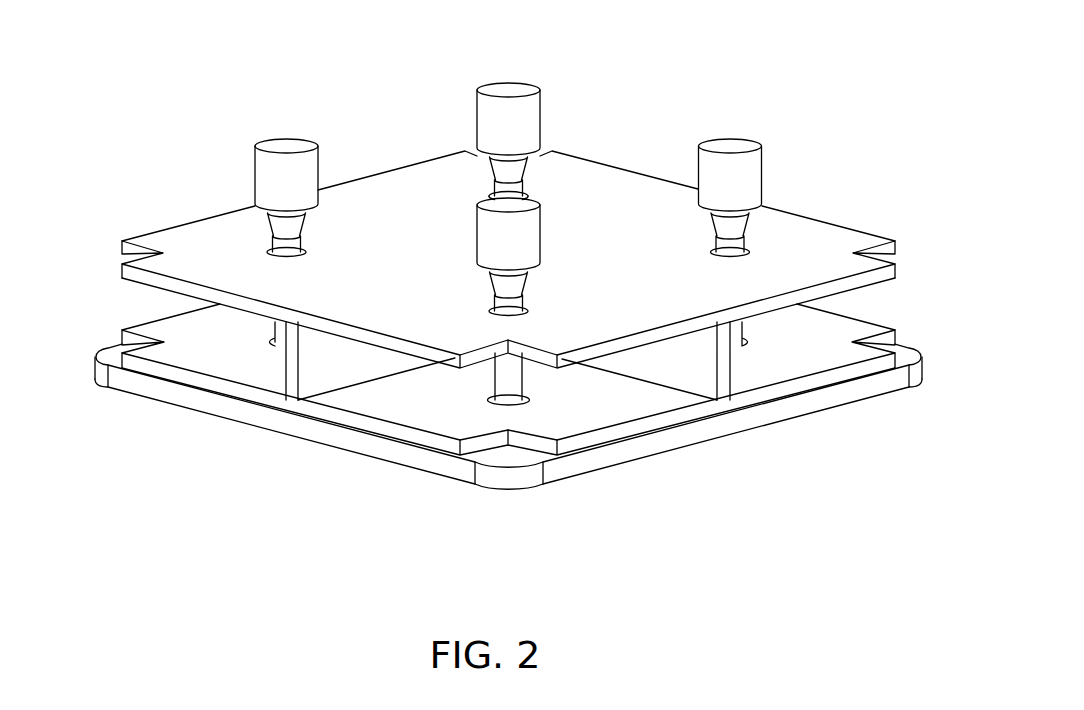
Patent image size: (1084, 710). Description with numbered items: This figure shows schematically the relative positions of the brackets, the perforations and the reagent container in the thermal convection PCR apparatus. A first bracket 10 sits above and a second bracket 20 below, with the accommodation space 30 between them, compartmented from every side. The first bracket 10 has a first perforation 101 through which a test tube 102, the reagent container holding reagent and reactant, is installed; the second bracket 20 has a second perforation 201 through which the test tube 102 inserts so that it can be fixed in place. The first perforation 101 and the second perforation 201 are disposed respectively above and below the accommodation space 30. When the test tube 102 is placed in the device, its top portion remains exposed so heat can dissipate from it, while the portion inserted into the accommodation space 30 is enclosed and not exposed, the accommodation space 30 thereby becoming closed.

The first bracket 10 is at (843, 240).
The second bracket 20 is at (917, 372).
The accommodation space 30 is at (250, 323).
The first perforation 101 is at (262, 245).
The test tube 102 is at (289, 146).
The second perforation 201 is at (267, 343).